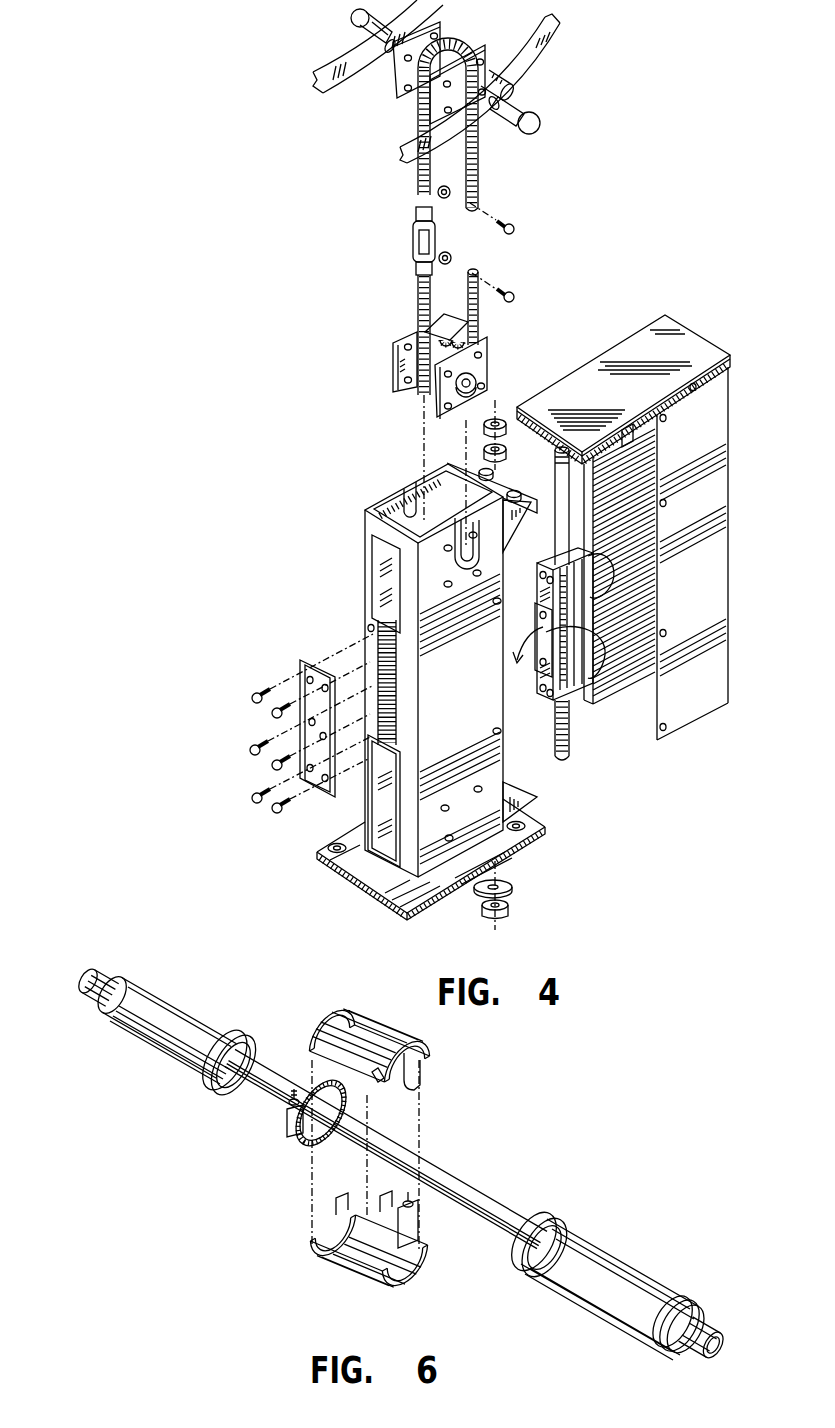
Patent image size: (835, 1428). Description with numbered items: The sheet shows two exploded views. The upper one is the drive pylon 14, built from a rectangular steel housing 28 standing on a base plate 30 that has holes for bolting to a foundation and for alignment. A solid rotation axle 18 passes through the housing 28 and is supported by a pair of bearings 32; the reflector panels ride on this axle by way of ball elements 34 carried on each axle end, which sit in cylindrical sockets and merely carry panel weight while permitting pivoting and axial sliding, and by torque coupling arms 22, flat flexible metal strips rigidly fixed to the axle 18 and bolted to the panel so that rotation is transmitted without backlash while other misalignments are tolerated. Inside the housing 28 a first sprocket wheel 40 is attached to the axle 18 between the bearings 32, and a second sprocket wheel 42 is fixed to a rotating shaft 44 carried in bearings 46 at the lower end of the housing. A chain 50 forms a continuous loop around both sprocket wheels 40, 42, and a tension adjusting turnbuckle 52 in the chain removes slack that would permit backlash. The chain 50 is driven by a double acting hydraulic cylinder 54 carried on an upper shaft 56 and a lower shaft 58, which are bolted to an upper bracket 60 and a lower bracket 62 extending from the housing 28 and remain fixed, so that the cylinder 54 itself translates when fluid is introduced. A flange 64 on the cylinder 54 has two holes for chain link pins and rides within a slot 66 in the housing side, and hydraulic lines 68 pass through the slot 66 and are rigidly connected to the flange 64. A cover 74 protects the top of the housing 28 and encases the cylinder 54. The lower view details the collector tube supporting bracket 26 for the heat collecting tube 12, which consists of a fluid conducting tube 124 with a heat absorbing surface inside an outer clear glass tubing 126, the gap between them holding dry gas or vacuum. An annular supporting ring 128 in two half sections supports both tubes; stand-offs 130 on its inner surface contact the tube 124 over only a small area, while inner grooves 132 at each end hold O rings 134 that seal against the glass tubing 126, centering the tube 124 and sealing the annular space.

In FIG. 6, the heat collecting tube 12 is at (170, 966).
In FIG. 4, the drive pylon 14 is at (310, 486).
In FIG. 4, the rotation axle 18 is at (395, 66).
In FIG. 4, the torque coupling arms 22 is at (335, 73).
In FIG. 6, the collector tube supporting bracket 26 is at (280, 1216).
In FIG. 4, the housing 28 is at (365, 588).
In FIG. 4, the base plate 30 is at (527, 848).
In FIG. 4, the bearings 32 is at (441, 27).
In FIG. 4, the ball elements 34 is at (351, 21).
In FIG. 4, the first sprocket wheel 40 is at (418, 106).
In FIG. 4, the second sprocket wheel 42 is at (463, 330).
In FIG. 4, the rotating shaft 44 is at (480, 377).
In FIG. 4, the bearings 46 is at (393, 346).
In FIG. 4, the chain 50 is at (418, 186).
In FIG. 4, the tension adjusting turnbuckle 52 is at (413, 240).
In FIG. 4, the double acting hydraulic cylinder 54 is at (537, 592).
In FIG. 4, the upper shaft 56 is at (555, 522).
In FIG. 4, the lower shaft 58 is at (570, 722).
In FIG. 4, the upper bracket 60 is at (515, 490).
In FIG. 4, the lower bracket 62 is at (538, 800).
In FIG. 4, the flange 64 is at (535, 608).
In FIG. 4, the slot 66 is at (471, 528).
In FIG. 4, the hydraulic lines 68 is at (612, 562).
In FIG. 4, the cover 74 is at (724, 540).
In FIG. 6, the fluid conducting tube 124 is at (262, 1066).
In FIG. 6, the outer clear glass tubing 126 is at (205, 1007).
In FIG. 6, the annular supporting ring 128 is at (405, 1052).
In FIG. 6, the stand-offs 130 is at (418, 1228).
In FIG. 6, the inner grooves 132 is at (381, 1080).
In FIG. 6, the O rings 134 is at (240, 1038).